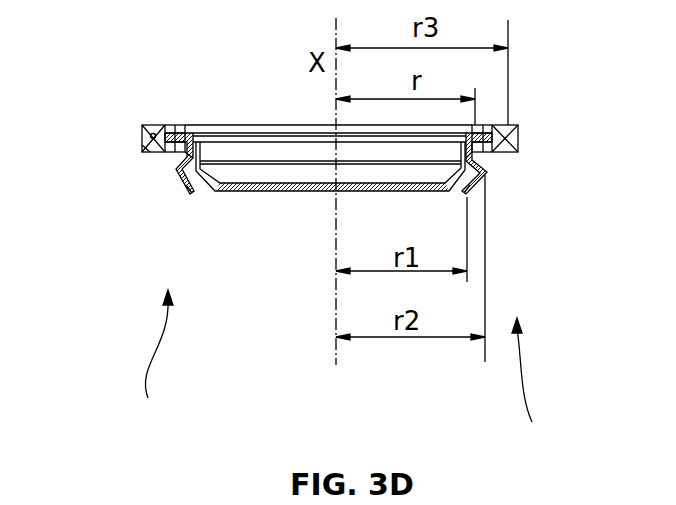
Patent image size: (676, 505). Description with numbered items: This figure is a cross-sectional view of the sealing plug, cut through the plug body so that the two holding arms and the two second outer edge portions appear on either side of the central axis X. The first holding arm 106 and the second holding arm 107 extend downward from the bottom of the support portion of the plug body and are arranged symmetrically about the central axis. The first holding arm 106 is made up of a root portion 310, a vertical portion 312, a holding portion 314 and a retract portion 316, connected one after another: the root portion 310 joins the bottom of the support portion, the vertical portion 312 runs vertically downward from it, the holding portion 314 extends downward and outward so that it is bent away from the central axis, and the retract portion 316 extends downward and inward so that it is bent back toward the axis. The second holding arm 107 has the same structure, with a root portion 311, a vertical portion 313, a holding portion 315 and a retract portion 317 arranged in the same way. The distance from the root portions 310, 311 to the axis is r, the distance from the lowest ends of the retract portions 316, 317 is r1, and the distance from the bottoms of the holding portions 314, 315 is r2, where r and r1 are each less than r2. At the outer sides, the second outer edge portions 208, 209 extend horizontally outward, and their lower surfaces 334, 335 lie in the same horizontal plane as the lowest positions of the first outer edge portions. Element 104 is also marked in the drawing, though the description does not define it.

The sealing element 104 is at (145, 130).
The first holding arm 106 is at (153, 360).
The second holding arm 107 is at (541, 385).
The second outer edge portion 208 is at (165, 150).
The second outer edge portion 209 is at (507, 130).
The root portion 310 is at (190, 137).
The root portion 311 is at (506, 127).
The vertical portion 312 is at (185, 153).
The vertical portion 313 is at (477, 152).
The holding portion 314 is at (206, 190).
The holding portion 315 is at (475, 165).
The retract portion 316 is at (191, 197).
The retract portion 317 is at (472, 196).
The lower surface 334 is at (150, 153).
The lower surface 335 is at (518, 150).